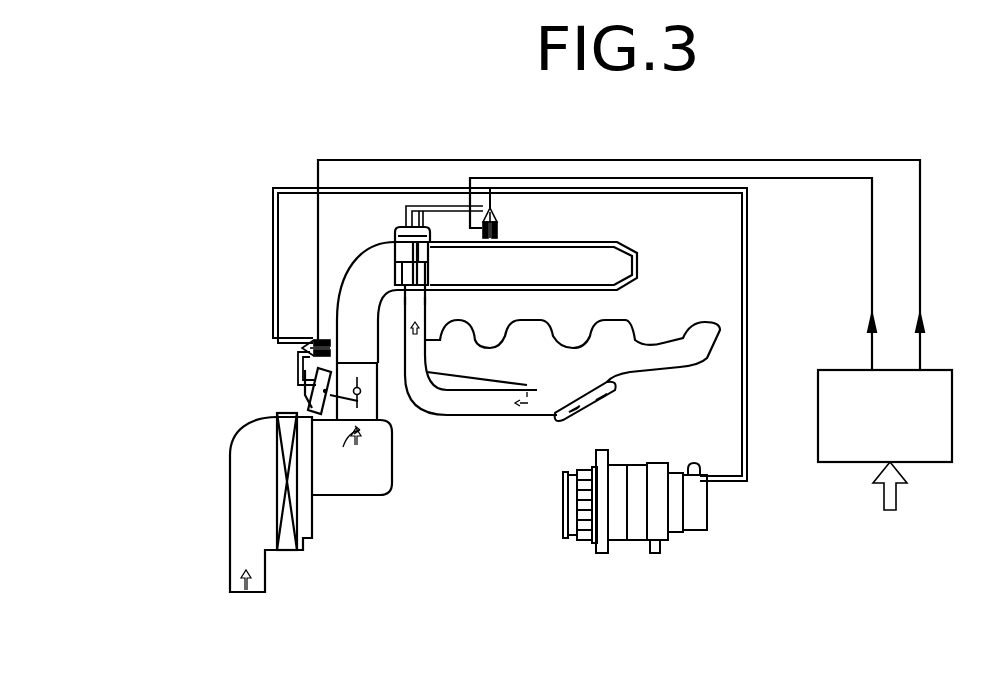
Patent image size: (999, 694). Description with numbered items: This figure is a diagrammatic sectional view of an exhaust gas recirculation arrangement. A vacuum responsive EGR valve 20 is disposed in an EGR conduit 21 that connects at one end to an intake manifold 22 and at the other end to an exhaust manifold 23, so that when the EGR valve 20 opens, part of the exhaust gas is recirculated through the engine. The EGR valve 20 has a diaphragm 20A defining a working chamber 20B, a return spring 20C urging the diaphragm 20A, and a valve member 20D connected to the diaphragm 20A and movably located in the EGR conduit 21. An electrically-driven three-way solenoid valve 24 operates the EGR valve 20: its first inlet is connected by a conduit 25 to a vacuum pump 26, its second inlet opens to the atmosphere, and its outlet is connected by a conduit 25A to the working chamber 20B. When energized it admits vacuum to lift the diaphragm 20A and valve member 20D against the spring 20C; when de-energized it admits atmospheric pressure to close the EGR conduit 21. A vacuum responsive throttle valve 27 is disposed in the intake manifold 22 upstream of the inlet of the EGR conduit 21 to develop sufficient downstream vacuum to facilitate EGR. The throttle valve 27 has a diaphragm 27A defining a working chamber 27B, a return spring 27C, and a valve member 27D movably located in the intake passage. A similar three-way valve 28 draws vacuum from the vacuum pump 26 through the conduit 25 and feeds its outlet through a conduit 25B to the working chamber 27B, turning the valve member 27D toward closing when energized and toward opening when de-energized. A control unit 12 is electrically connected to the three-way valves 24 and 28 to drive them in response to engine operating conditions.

The control unit 12 is at (954, 400).
The EGR valve 20 is at (393, 222).
The diaphragm 20A is at (432, 230).
The working chamber 20B is at (410, 227).
The return spring 20C is at (421, 232).
The valve member 20D is at (394, 283).
The EGR conduit 21 is at (437, 416).
The intake manifold 22 is at (510, 292).
The exhaust manifold 23 is at (548, 404).
The three-way solenoid valve 24 is at (503, 216).
The conduit 25 is at (748, 246).
The conduit 25A is at (416, 212).
The conduit 25B is at (297, 362).
The vacuum pump 26 is at (710, 520).
The throttle valve 27 is at (298, 396).
The diaphragm 27A is at (322, 410).
The working chamber 27B is at (317, 373).
The return spring 27C is at (312, 393).
The valve member 27D is at (362, 380).
The three-way valve 28 is at (312, 335).